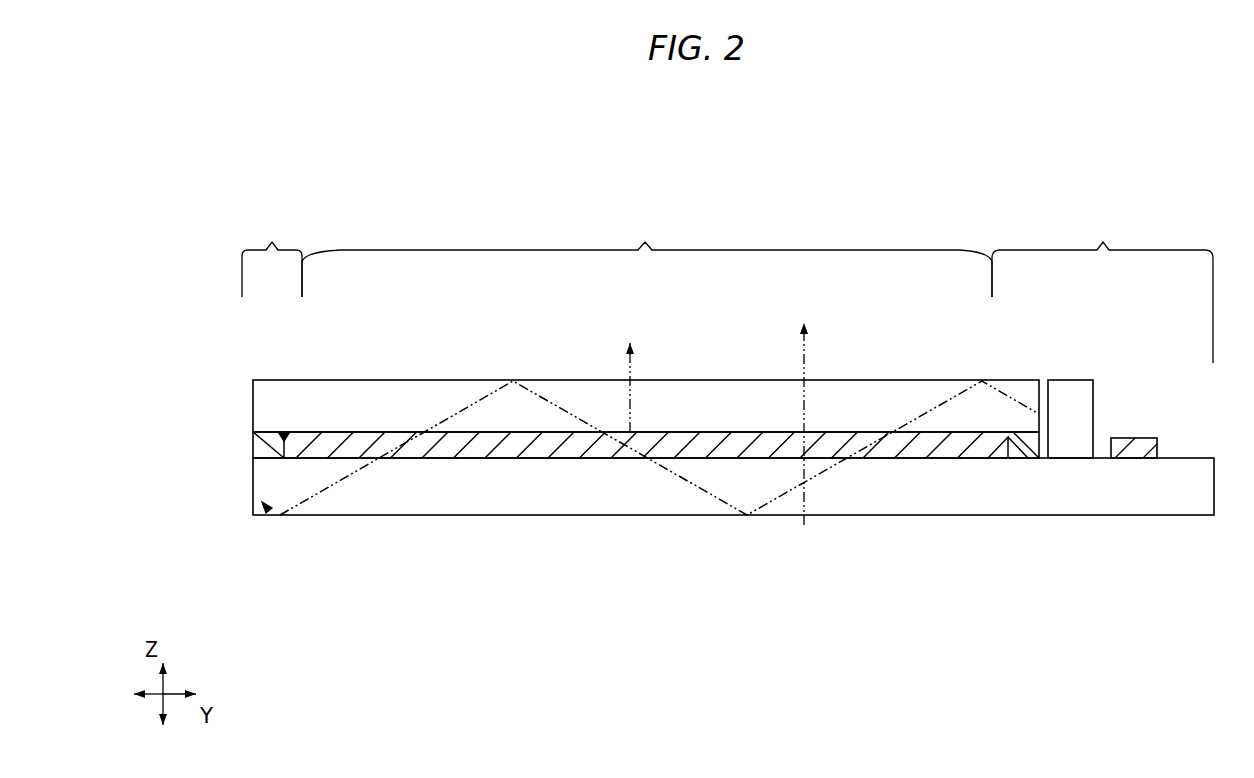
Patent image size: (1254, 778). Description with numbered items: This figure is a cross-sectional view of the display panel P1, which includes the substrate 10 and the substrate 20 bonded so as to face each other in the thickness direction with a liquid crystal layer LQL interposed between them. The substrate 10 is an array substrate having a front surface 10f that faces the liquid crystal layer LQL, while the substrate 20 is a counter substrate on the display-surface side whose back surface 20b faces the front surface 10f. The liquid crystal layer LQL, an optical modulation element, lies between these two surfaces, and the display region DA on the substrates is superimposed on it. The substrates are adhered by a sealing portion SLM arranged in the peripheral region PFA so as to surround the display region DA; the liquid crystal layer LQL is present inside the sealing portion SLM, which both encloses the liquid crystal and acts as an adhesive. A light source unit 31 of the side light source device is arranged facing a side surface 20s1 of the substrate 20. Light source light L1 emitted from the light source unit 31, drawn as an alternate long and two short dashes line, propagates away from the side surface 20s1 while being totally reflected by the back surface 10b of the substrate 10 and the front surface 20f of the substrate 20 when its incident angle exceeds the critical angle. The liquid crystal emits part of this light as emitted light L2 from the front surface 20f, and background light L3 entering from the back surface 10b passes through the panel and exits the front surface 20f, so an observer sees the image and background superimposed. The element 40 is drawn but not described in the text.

The substrate 20 is at (275, 397).
The substrate 10 is at (280, 486).
The sealing portion SLM is at (283, 440).
The liquid crystal layer LQL is at (445, 447).
The light source unit 31 is at (1067, 432).
The light source 40 is at (1133, 447).
The light source light L1 is at (913, 418).
The emitted light L2 is at (629, 393).
The background light L3 is at (803, 370).
The front surface 20f is at (516, 379).
The back surface 20b is at (761, 435).
The front surface 10f is at (573, 456).
The back surface 10b is at (539, 517).
The side surface 20s1 is at (1042, 403).
The display panel P1 is at (466, 223).
The peripheral region PFA is at (727, 286).
The display region DA is at (647, 253).